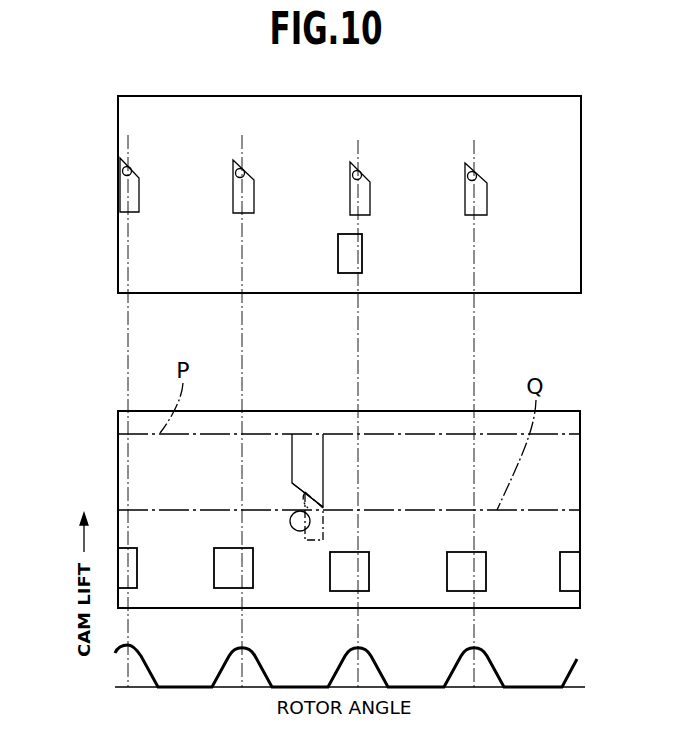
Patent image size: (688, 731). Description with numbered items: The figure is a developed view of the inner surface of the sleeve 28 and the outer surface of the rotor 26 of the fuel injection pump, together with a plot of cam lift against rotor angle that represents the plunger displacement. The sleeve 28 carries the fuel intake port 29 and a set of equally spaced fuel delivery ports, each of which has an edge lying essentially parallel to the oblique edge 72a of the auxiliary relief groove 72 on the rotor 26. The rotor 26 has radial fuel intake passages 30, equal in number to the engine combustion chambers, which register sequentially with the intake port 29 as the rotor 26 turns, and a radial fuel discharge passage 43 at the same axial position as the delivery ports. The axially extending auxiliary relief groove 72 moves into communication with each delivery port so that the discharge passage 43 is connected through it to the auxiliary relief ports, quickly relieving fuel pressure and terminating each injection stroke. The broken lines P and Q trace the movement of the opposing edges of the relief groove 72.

The rotor 26 is at (122, 463).
The sleeve 28 is at (125, 124).
The fuel intake port 29 is at (352, 251).
The radial fuel intake passages 30 is at (133, 560).
The radial fuel discharge passage 43 is at (292, 513).
The auxiliary relief groove 72 is at (313, 445).
The edge of auxiliary relief groove 72a is at (305, 488).